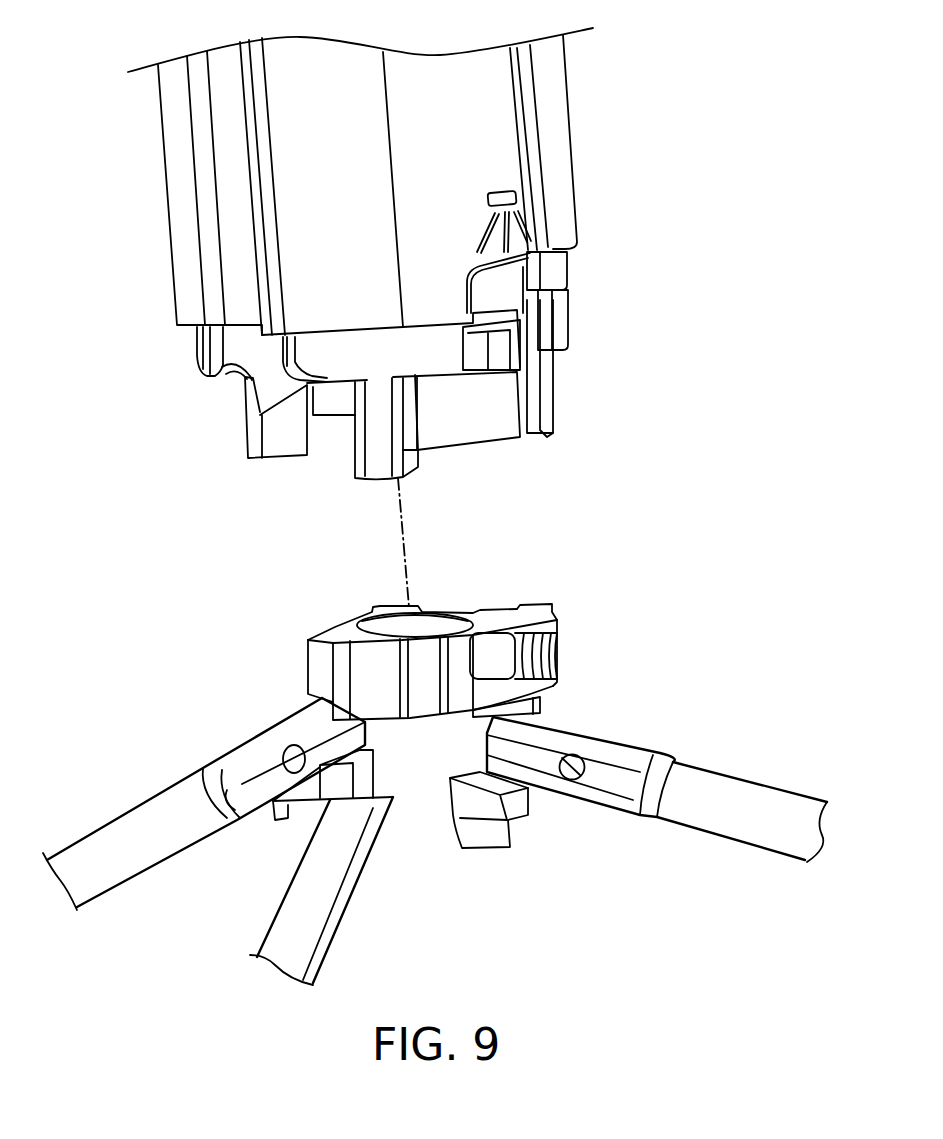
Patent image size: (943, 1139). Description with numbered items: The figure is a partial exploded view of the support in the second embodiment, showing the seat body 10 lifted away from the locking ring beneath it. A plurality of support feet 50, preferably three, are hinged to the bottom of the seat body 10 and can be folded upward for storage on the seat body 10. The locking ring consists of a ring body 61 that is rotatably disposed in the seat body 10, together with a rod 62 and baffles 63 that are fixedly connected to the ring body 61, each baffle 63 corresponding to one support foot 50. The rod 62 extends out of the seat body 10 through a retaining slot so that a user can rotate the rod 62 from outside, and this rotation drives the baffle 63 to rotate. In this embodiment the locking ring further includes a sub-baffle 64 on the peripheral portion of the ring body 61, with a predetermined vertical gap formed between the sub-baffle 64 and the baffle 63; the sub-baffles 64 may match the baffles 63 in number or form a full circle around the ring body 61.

The seat body 10 is at (188, 289).
The support feet 50 is at (750, 793).
The ring body 61 is at (365, 667).
The rod 62 is at (557, 619).
The baffle 63 is at (487, 837).
The sub-baffle 64 is at (530, 703).